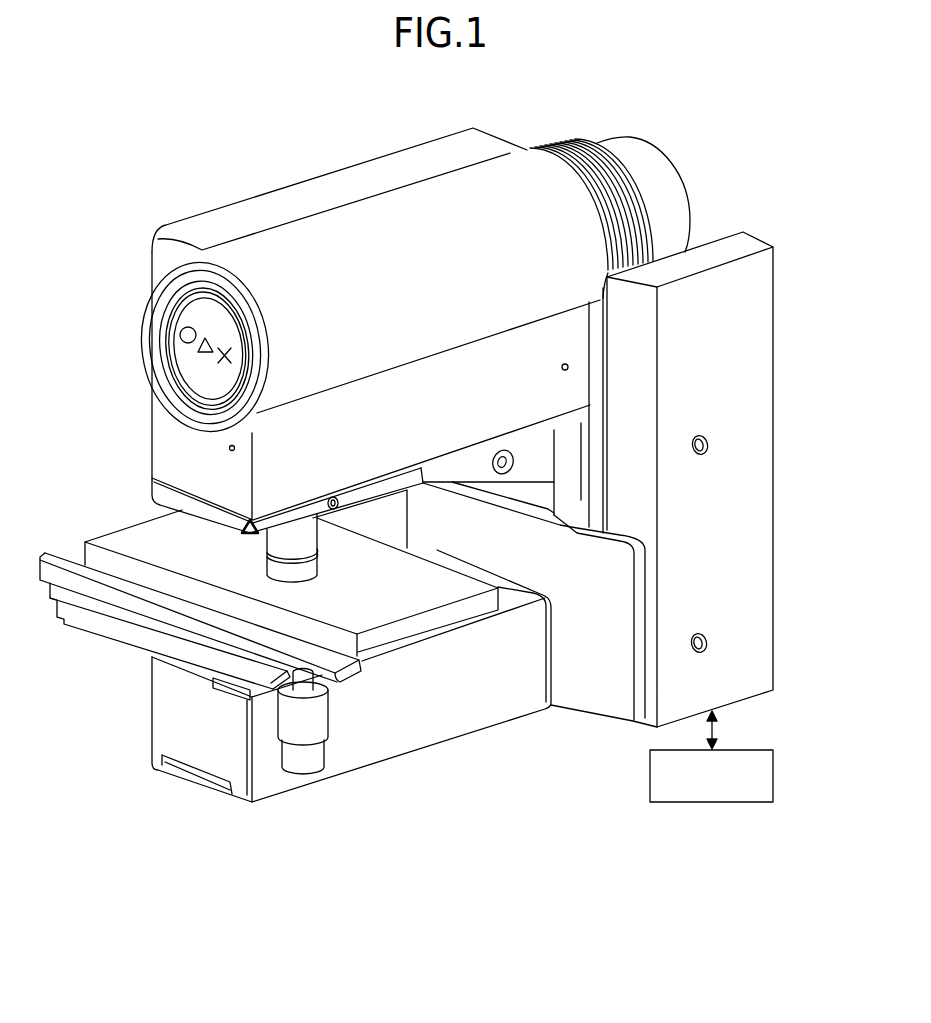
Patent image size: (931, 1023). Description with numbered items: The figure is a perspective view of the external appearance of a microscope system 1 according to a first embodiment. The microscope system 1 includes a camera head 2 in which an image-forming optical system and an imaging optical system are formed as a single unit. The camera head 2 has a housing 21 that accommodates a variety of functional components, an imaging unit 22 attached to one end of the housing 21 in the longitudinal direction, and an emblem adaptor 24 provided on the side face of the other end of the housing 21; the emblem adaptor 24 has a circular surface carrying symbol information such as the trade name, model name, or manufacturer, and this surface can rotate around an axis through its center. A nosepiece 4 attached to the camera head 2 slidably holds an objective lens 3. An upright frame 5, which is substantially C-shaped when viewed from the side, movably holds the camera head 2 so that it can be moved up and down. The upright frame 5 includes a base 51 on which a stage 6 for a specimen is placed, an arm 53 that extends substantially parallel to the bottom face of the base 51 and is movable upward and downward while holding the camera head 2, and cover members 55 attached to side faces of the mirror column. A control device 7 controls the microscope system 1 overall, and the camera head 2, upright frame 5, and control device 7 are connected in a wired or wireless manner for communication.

The microscope system 1 is at (182, 153).
The camera head 2 is at (394, 153).
The housing 21 is at (328, 180).
The imaging unit 22 is at (652, 160).
The emblem adaptor 24 is at (148, 292).
The objective lens 3 is at (278, 546).
The nosepiece 4 is at (158, 490).
The upright frame 5 is at (776, 278).
The cover members 55 is at (758, 432).
The arm 53 is at (560, 465).
The stage 6 is at (365, 602).
The base 51 is at (347, 764).
The control device 7 is at (757, 750).